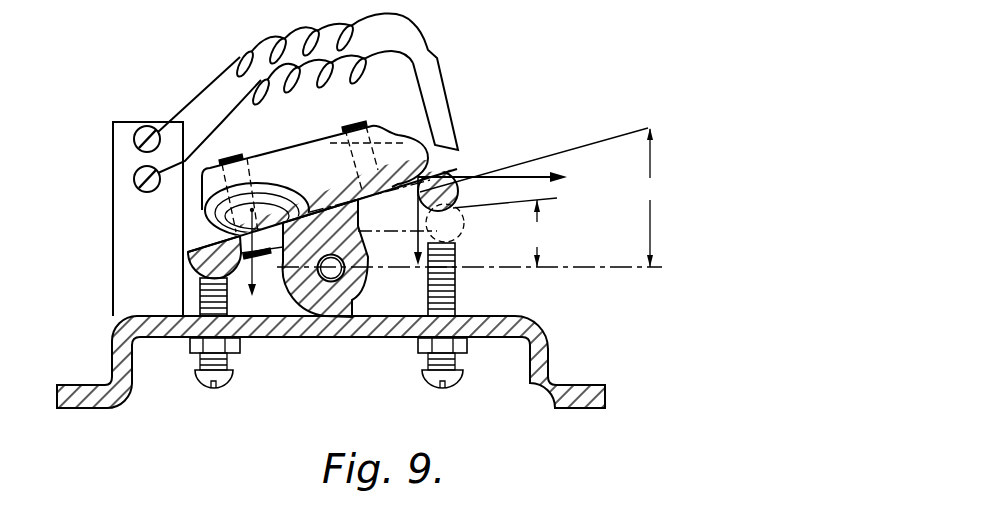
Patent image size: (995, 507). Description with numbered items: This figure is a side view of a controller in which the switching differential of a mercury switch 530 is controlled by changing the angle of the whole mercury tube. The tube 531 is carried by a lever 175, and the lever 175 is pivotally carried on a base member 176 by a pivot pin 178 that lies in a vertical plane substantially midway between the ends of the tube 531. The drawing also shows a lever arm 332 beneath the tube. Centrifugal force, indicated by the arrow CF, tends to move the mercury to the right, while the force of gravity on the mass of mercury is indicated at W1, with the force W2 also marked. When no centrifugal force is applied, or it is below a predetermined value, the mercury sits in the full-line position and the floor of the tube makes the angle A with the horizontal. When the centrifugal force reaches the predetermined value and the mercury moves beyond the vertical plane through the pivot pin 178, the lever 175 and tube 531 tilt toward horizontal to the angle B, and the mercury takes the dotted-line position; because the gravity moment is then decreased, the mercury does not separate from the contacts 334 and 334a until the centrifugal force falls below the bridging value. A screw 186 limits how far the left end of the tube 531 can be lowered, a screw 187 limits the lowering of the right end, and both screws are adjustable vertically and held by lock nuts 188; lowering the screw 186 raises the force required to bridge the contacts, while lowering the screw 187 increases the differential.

The base member 176 is at (92, 407).
The pivot pin 178 is at (352, 302).
The screw 186 is at (233, 366).
The screw 187 is at (428, 367).
The lock nuts 188 is at (240, 346).
The lever 175 is at (192, 264).
The lever arm 332 is at (204, 230).
The contact 334 is at (358, 177).
The contact 334a is at (318, 143).
The mercury switch 530 is at (188, 191).
The tube 531 is at (270, 128).
The force of gravity on the mercury W1 is at (205, 222).
The weight force W2 is at (412, 234).
The centrifugal force CF is at (542, 177).
The angle A is at (536, 197).
The angle B is at (505, 232).